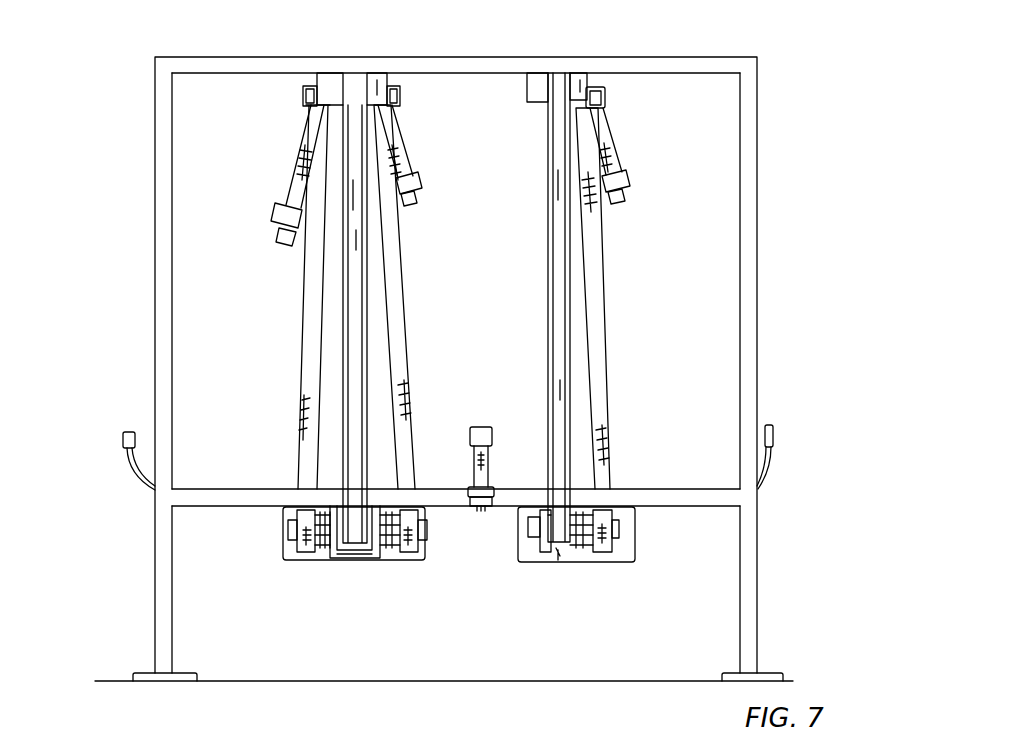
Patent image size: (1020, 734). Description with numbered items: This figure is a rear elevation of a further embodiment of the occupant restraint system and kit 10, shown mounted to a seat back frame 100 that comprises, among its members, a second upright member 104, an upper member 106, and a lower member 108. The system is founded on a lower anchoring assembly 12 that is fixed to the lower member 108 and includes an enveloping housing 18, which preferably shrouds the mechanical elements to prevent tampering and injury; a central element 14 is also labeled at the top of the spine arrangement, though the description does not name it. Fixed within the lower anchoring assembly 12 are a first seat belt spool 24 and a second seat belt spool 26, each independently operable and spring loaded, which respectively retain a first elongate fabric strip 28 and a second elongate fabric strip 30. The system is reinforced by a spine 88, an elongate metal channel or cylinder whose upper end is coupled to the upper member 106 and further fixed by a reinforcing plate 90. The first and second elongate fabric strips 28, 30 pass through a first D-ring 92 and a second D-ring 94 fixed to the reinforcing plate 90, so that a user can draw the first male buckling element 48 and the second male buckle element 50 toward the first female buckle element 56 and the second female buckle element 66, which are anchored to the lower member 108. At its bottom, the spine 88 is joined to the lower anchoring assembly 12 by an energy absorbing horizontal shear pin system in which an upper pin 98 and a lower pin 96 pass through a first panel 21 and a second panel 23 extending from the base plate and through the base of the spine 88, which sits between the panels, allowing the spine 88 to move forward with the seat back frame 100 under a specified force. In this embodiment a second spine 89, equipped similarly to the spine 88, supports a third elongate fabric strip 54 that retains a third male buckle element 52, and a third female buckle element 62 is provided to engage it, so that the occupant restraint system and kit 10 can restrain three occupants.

The occupant restraint system and kit 10 is at (503, 215).
The lower anchoring assembly 12 is at (374, 578).
The central support shaft 14 is at (354, 277).
The enveloping housing 18 is at (283, 560).
The first panel 21 is at (400, 556).
The second panel 23 is at (338, 560).
The first seat belt spool 24 is at (427, 552).
The second seat belt spool 26 is at (305, 550).
The first elongate fabric strip 28 is at (403, 253).
The second elongate fabric strip 30 is at (305, 290).
The first male buckling element 48 is at (419, 182).
The second male buckle element 50 is at (277, 208).
The third male buckle element 52 is at (628, 182).
The third elongate fabric strip 54 is at (605, 298).
The first female buckle element 56 is at (484, 427).
The third female buckle element 62 is at (775, 433).
The second female buckle element 66 is at (123, 432).
The spine 88 is at (357, 78).
The second spine 89 is at (572, 260).
The reinforcing plate 90 is at (387, 77).
The first D-ring 92 is at (400, 95).
The second D-ring 94 is at (305, 95).
The lower pin 96 is at (405, 550).
The upper pin 98 is at (378, 558).
The seat back frame 100 is at (420, 346).
The second upright member 104 is at (155, 293).
The upper member 106 is at (215, 55).
The lower member 108 is at (222, 488).